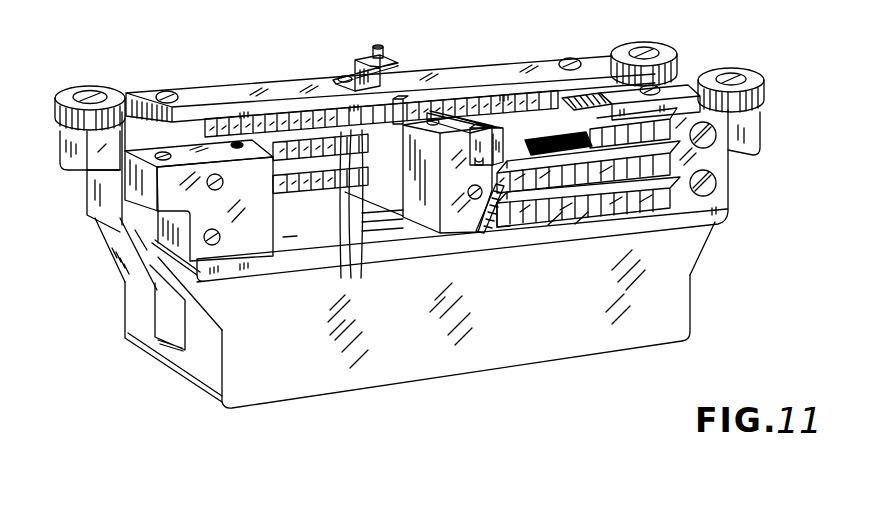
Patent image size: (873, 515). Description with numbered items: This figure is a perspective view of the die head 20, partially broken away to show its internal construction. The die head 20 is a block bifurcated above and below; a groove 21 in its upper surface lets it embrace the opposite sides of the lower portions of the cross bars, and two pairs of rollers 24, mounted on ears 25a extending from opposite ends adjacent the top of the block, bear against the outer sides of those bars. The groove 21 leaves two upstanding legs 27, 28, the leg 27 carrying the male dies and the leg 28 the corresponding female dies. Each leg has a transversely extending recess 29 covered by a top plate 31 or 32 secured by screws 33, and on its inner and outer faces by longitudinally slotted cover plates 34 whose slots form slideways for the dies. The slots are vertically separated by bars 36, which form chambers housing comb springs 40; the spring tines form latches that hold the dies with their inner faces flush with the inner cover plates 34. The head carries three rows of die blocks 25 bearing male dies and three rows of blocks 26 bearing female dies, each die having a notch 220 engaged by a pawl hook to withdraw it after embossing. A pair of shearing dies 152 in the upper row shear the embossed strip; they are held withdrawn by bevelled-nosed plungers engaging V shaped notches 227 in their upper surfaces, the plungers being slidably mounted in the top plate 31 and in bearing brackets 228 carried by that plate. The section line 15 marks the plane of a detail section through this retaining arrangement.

The section line 15 is at (333, 38).
The die head 20 is at (673, 243).
The groove 21 is at (147, 250).
The rollers 24 is at (107, 86).
The die blocks 25 is at (302, 125).
The ears 25a is at (60, 148).
The blocks 26 is at (565, 218).
The leg 27 is at (100, 215).
The leg 28 is at (173, 278).
The recesses 29 is at (301, 238).
The top plate 31 is at (255, 90).
The top plate 32 is at (667, 90).
The screws 33 is at (167, 91).
The cover plates 34 is at (84, 193).
The bars 36 is at (349, 215).
The comb springs 40 is at (508, 168).
The shearing dies 152 is at (395, 122).
The notches 220 is at (510, 228).
The V shaped notches 227 is at (384, 50).
The bearing brackets 228 is at (350, 62).